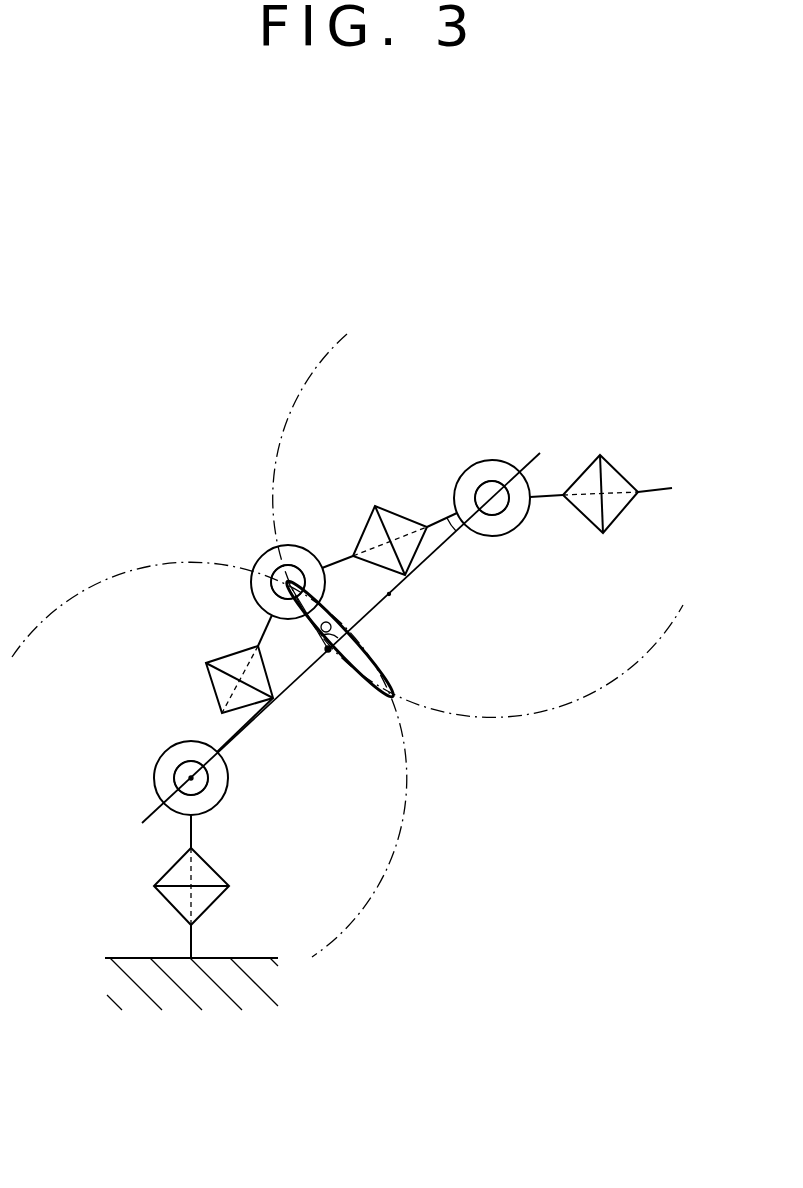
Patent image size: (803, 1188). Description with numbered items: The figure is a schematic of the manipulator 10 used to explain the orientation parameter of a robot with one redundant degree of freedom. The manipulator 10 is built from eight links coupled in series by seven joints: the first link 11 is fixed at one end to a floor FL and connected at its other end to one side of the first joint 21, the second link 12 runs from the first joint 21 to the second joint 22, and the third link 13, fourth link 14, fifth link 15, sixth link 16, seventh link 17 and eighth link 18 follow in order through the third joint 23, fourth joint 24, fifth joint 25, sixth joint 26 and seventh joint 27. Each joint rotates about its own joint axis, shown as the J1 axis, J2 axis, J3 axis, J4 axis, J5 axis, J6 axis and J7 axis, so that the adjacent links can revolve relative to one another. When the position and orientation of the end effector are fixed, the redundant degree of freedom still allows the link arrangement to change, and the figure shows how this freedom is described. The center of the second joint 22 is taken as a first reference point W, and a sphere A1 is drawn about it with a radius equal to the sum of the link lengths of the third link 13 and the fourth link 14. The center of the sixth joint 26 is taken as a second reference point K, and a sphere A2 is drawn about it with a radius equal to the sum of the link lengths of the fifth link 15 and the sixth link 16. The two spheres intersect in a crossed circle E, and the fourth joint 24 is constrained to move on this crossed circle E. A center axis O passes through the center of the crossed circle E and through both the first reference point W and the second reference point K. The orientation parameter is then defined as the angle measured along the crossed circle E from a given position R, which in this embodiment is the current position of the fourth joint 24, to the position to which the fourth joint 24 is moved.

The manipulator 10 is at (125, 481).
The first link 11 is at (191, 941).
The second link 12 is at (193, 830).
The third link 13 is at (222, 735).
The fourth link 14 is at (265, 627).
The fifth link 15 is at (334, 562).
The sixth link 16 is at (452, 528).
The seventh link 17 is at (547, 498).
The eighth link 18 is at (652, 490).
The first joint 21 is at (172, 867).
The second joint 22 is at (165, 750).
The third joint 23 is at (218, 657).
The fourth joint 24 is at (263, 557).
The fifth joint 25 is at (368, 520).
The sixth joint 26 is at (463, 478).
The seventh joint 27 is at (582, 467).
The J1 axis J1 is at (180, 900).
The J2 axis J2 is at (176, 782).
The J3 axis J3 is at (240, 683).
The J4 axis J4 is at (252, 585).
The J5 axis J5 is at (408, 533).
The J6 axis J6 is at (494, 492).
The J7 axis J7 is at (631, 481).
The first reference point W is at (194, 780).
The second reference point K is at (494, 517).
The center axis O is at (389, 594).
The given position R is at (328, 653).
The crossed circle E is at (372, 688).
The floor FL is at (135, 958).
The sphere A1 is at (400, 837).
The sphere A2 is at (578, 702).